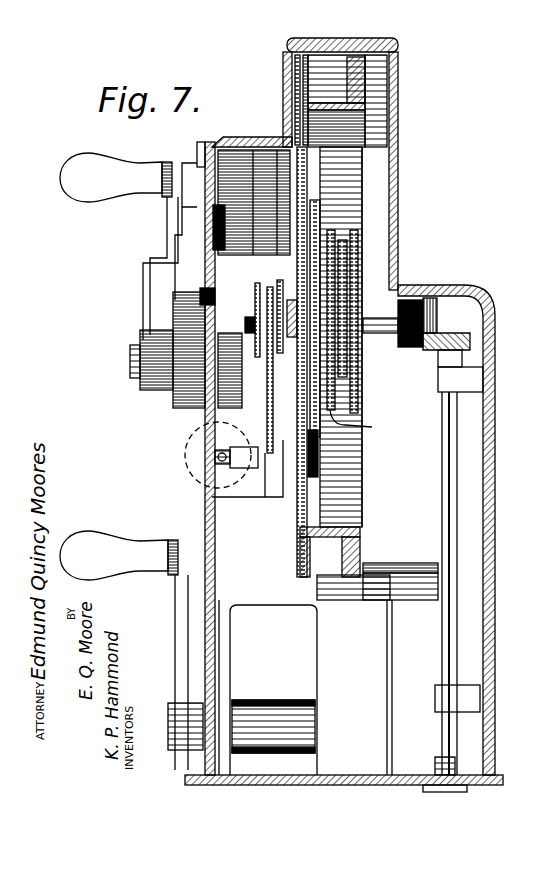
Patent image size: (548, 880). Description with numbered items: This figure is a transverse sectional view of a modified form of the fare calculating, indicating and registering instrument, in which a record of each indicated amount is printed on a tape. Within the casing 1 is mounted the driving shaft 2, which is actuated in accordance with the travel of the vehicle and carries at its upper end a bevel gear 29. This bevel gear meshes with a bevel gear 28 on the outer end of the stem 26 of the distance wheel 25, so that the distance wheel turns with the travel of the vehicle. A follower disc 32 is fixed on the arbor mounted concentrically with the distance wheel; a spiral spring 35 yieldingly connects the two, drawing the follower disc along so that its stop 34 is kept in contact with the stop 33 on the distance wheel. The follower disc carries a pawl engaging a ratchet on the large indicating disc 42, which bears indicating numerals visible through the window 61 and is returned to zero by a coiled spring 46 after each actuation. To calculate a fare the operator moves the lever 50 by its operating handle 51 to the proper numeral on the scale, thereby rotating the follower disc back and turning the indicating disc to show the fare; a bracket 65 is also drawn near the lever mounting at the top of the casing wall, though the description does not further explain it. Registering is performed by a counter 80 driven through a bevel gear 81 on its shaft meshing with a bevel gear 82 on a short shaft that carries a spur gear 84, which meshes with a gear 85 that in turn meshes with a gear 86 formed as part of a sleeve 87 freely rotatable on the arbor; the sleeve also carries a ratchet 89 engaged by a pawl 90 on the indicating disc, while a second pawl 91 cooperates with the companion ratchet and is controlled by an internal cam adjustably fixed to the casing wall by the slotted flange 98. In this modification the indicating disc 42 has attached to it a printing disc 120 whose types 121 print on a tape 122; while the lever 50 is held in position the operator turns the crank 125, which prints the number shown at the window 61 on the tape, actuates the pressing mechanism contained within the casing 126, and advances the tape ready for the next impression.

The casing 1 is at (486, 450).
The driving shaft 2 is at (456, 430).
The distance wheel 25 is at (340, 240).
The stem 26 is at (385, 305).
The bevel gear 28 is at (432, 296).
The bevel gear 29 is at (446, 324).
The follower disc 32 is at (365, 426).
The stop 33 is at (350, 246).
The stop 34 is at (356, 252).
The spiral spring 35 is at (350, 385).
The indicating disc 42 is at (330, 195).
The coiled spring 46 is at (320, 214).
The lever 50 is at (166, 229).
The operating handle 51 is at (94, 168).
The window 61 is at (288, 55).
The bracket 65 is at (200, 143).
The counter 80 is at (235, 446).
The bevel gear 81 is at (215, 449).
The bevel gear 82 is at (230, 461).
The spur gear 84 is at (270, 470).
The gear 85 is at (270, 353).
The gear 86 is at (282, 320).
The sleeve 87 is at (256, 292).
The ratchet 89 is at (300, 360).
The pawl 90 is at (280, 162).
The pawl 91 is at (250, 162).
The slotted flange 98 is at (149, 253).
The printing disc 120 is at (358, 98).
The types 121 is at (399, 50).
The tape 122 is at (370, 600).
The crank 125 is at (176, 595).
The casing 126 is at (310, 675).